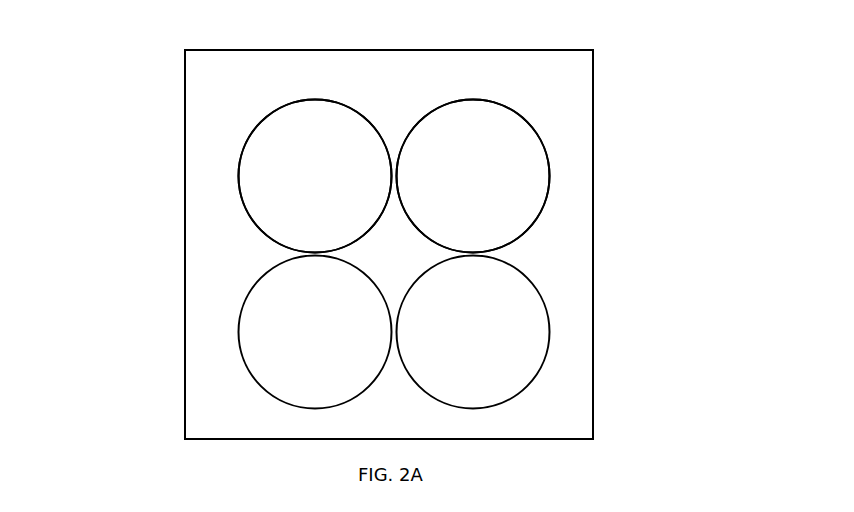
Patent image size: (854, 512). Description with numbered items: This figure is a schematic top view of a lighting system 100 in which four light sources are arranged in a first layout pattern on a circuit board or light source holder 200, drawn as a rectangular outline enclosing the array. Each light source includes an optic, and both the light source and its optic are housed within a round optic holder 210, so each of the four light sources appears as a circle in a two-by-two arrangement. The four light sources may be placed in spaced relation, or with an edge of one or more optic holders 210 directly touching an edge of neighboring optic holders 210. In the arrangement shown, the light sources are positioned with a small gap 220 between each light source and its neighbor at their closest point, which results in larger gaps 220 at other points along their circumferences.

The lighting system 100 is at (604, 343).
The circuit board or light source holder 200 is at (218, 80).
The round optic holder 210 is at (240, 166).
The gap 220 is at (497, 252).